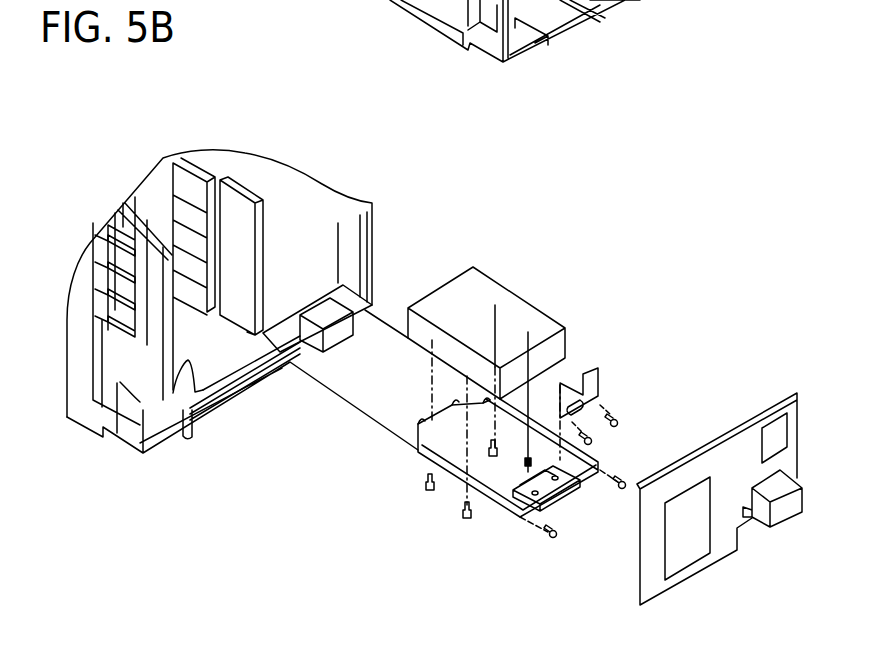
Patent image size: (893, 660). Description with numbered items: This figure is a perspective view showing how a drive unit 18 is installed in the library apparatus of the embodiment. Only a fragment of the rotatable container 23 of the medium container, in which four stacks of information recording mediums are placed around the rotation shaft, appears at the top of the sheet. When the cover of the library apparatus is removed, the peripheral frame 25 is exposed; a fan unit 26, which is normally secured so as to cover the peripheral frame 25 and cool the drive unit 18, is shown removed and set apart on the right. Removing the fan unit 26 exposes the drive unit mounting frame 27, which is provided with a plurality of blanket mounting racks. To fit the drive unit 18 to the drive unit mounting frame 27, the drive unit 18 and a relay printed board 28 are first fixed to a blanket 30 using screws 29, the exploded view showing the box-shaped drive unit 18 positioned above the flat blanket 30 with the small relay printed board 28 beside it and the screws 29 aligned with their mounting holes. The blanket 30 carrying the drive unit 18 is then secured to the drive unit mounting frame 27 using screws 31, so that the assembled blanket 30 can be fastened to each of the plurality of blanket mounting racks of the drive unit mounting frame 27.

The drive unit 18 is at (497, 285).
The rotatable container 23 is at (333, 0).
The peripheral frame 25 is at (368, 253).
The fan unit 26 is at (738, 437).
The drive unit mounting frame 27 is at (186, 157).
The relay printed board 28 is at (596, 372).
The screws 29 is at (491, 457).
The blanket 30 is at (510, 512).
The screws 31 is at (618, 488).